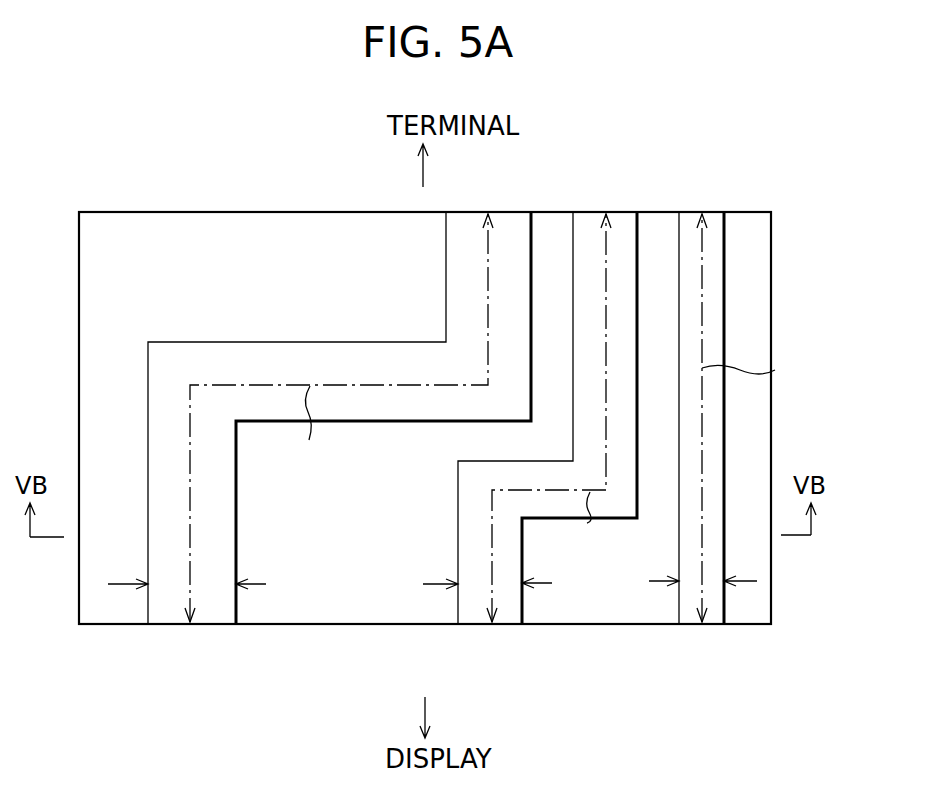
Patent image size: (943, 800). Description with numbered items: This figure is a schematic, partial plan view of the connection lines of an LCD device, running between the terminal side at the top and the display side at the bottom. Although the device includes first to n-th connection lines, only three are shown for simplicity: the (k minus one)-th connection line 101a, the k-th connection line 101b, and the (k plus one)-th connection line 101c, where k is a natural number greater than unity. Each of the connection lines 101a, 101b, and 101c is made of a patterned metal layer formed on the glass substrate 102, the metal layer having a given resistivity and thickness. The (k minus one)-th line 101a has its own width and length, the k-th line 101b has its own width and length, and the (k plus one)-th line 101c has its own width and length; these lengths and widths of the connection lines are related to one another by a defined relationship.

The glass substrate 102 is at (103, 378).
The (k−1)-th connection line 101a is at (173, 610).
The k-th connection line 101b is at (480, 605).
The (k+1)-th connection line 101c is at (692, 607).